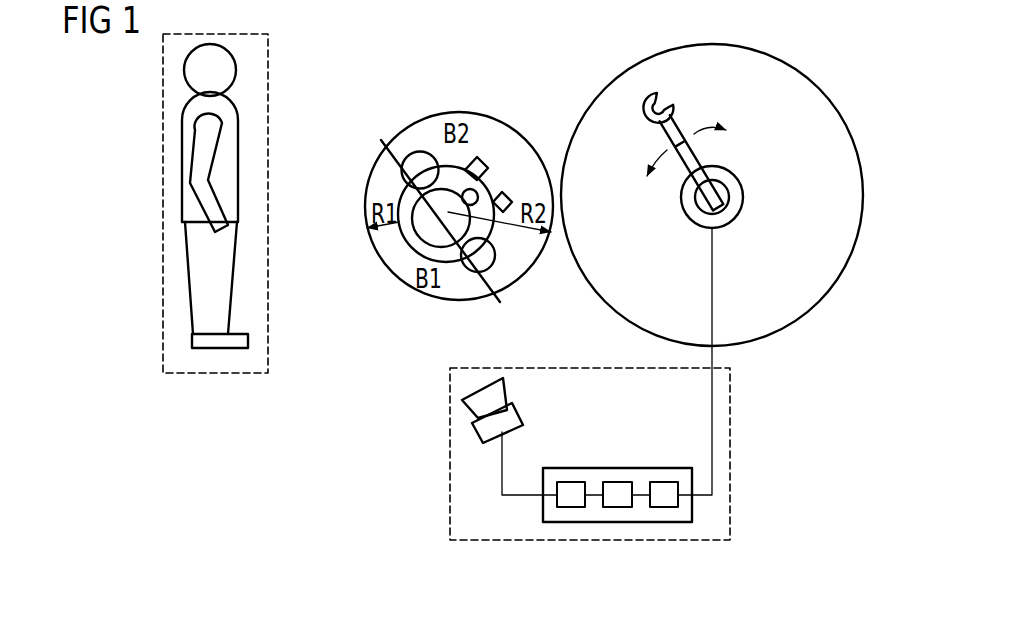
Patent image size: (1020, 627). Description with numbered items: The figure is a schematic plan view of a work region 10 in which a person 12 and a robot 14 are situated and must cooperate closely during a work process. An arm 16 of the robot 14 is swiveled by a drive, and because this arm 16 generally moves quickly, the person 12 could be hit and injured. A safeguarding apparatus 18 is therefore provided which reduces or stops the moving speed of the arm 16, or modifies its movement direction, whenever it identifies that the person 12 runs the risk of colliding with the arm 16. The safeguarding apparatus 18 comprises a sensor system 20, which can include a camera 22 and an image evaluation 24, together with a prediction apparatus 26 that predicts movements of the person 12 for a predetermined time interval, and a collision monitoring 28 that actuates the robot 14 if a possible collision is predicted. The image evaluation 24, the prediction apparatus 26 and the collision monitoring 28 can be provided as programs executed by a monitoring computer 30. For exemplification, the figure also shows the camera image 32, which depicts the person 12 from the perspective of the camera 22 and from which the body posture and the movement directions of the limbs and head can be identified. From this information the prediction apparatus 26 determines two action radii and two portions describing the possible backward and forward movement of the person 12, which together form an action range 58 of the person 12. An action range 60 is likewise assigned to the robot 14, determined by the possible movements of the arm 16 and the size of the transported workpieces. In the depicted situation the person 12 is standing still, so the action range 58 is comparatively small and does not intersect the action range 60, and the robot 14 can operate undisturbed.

The work region 10 is at (372, 379).
The person 12 is at (402, 242).
The robot 14 is at (745, 197).
The arm 16 is at (684, 121).
The safeguarding apparatus 18 is at (450, 476).
The sensor system 20 is at (479, 498).
The camera 22 is at (470, 410).
The image evaluation 24 is at (568, 482).
The prediction apparatus 26 is at (618, 482).
The collision monitoring 28 is at (663, 482).
The monitoring computer 30 is at (594, 468).
The camera image 32 is at (215, 373).
The action range 58 is at (413, 116).
The action range 60 is at (826, 90).